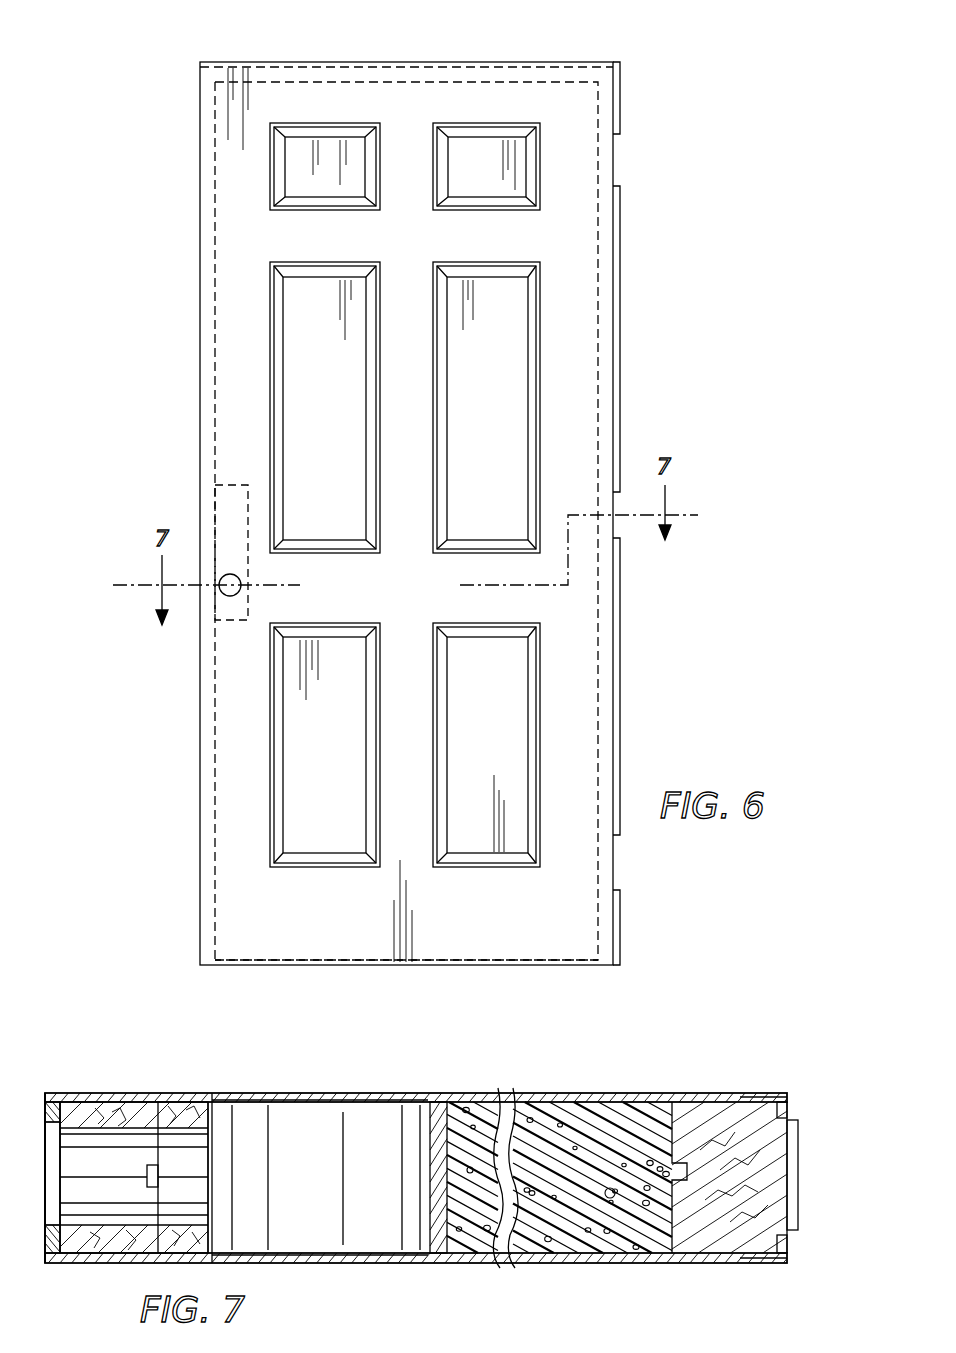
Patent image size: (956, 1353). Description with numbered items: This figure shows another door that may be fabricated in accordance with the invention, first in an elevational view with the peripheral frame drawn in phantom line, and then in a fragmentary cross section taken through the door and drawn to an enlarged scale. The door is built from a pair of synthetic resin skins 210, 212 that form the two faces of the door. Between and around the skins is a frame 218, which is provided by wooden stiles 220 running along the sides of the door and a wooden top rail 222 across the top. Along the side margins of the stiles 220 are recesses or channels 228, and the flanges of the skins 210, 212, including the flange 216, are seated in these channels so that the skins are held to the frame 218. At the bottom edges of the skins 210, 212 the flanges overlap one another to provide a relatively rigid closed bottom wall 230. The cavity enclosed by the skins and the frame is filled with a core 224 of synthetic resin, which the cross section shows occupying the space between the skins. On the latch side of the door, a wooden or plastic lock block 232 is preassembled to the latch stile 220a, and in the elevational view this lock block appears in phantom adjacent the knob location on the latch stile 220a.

In FIG. 6, the synthetic resin skin 210 is at (567, 468).
In FIG. 7, the synthetic resin skin 210 is at (650, 1262).
In FIG. 7, the synthetic resin skin 212 is at (623, 1093).
In FIG. 7, the flange 216 is at (813, 1087).
In FIG. 6, the frame 218 is at (608, 378).
In FIG. 7, the frame 218 is at (798, 1148).
In FIG. 6, the wooden stile 220 is at (612, 318).
In FIG. 7, the wooden stile 220 is at (735, 1233).
In FIG. 6, the latch stile 220a is at (208, 347).
In FIG. 7, the latch stile 220a is at (100, 1093).
In FIG. 6, the wooden top rail 222 is at (505, 62).
In FIG. 7, the core 224 is at (568, 1228).
In FIG. 7, the recess or channel 228 is at (760, 1107).
In FIG. 6, the closed bottom wall 230 is at (570, 966).
In FIG. 6, the lock block 232 is at (227, 503).
In FIG. 7, the lock block 232 is at (190, 1112).